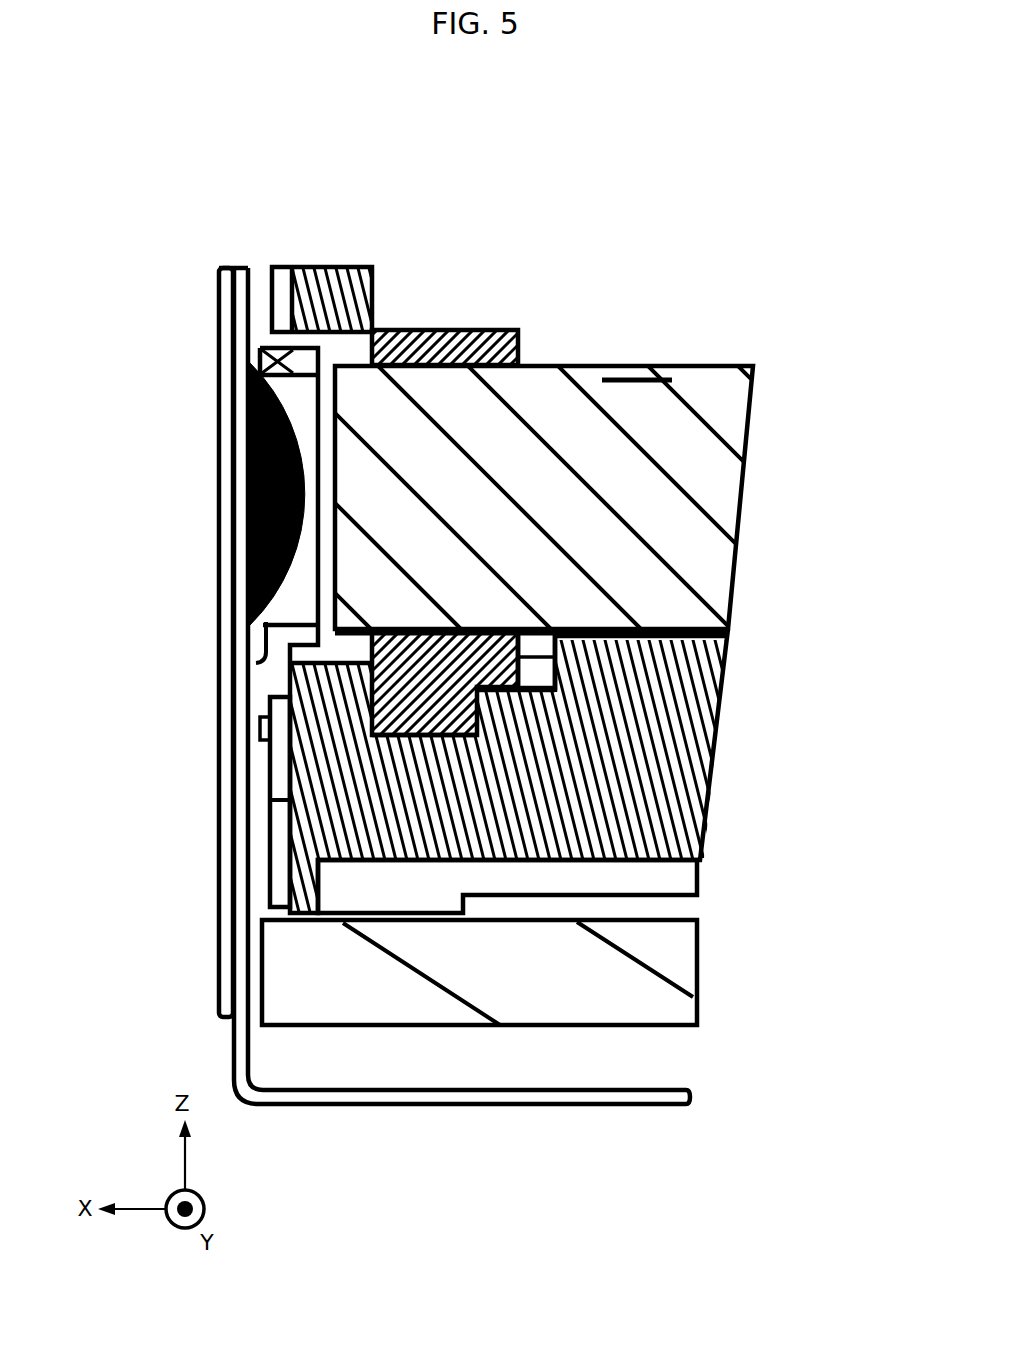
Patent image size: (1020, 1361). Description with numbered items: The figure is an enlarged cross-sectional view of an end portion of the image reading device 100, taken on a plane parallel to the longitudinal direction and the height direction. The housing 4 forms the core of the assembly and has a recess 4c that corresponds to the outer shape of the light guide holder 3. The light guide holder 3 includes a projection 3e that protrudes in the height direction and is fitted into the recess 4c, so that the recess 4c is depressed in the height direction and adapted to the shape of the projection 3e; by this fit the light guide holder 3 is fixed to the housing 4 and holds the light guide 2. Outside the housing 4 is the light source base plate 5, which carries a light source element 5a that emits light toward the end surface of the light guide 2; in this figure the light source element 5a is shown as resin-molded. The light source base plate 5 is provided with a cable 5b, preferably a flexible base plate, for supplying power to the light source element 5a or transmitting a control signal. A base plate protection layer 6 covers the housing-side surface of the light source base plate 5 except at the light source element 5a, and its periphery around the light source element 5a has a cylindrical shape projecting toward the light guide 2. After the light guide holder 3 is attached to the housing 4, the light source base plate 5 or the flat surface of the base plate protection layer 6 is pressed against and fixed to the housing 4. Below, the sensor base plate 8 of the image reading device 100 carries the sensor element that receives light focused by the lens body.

The light guide 2 is at (700, 385).
The light guide holder 3 is at (462, 330).
The projection 3e is at (417, 707).
The housing 4 is at (340, 267).
The recess 4c is at (480, 728).
The light source base plate 5 is at (238, 501).
The light source element 5a is at (248, 430).
The cable 5b is at (507, 1090).
The base plate protection layer 6 is at (280, 343).
The sensor base plate 8 is at (632, 990).
The image reading device 100 is at (790, 1143).